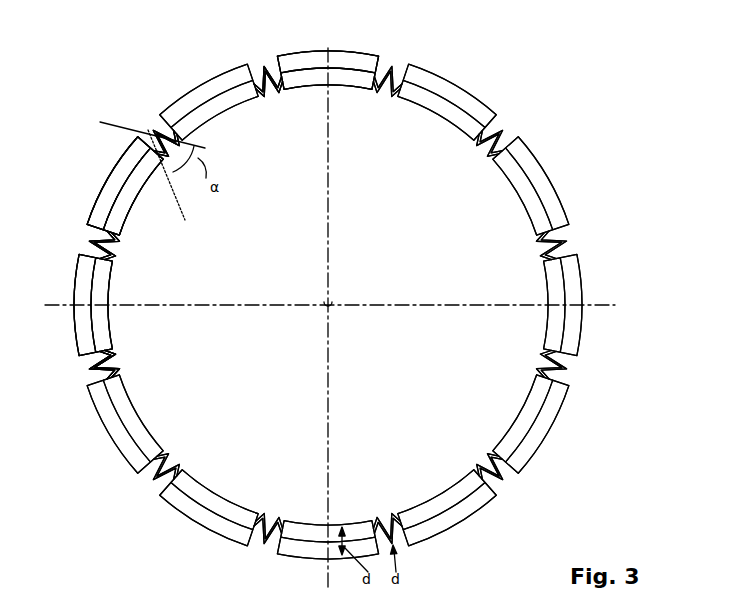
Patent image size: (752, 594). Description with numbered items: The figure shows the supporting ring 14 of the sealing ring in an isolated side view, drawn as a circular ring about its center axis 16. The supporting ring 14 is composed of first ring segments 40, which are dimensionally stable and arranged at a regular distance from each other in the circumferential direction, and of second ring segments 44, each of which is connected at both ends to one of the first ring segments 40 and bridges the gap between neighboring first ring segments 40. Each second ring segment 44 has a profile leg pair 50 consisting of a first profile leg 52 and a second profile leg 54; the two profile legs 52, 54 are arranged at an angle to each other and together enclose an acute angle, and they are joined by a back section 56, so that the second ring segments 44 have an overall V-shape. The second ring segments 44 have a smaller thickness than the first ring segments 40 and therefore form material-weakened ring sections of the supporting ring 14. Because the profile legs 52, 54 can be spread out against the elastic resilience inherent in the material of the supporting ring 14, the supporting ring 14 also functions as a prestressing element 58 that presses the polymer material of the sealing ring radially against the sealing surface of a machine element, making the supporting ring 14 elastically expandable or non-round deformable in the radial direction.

The supporting ring 14 is at (553, 98).
The center axis 16 is at (333, 302).
The first ring segments 40 is at (416, 92).
The second ring segments 44 is at (280, 108).
The profile leg pair 50 is at (265, 58).
The first profile leg 52 is at (243, 66).
The second profile leg 54 is at (283, 55).
The back section 56 is at (143, 167).
The prestressing element 58 is at (84, 371).